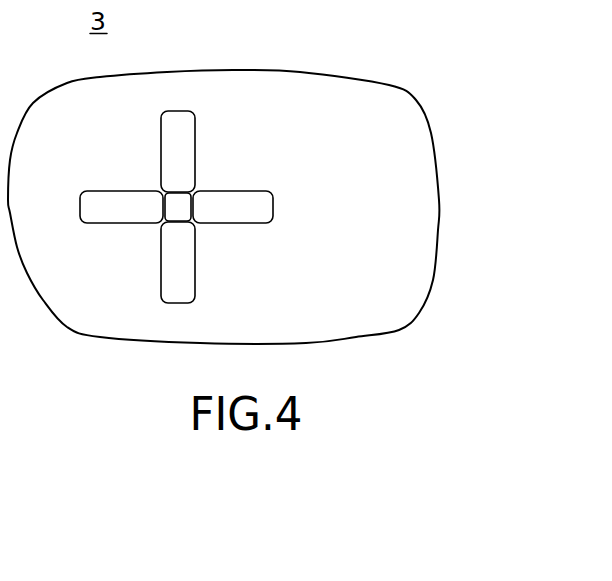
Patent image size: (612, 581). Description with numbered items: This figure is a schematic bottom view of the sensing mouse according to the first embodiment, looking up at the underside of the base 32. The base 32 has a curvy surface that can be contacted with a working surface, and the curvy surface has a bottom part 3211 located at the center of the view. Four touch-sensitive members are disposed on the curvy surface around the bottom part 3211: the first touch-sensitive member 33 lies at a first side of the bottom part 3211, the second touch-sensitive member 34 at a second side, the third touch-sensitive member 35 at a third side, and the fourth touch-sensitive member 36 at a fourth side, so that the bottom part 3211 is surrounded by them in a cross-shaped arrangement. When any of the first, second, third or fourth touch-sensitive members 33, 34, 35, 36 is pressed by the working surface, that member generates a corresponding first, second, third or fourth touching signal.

The base 32 is at (409, 157).
The first touch-sensitive member 33 is at (128, 197).
The second touch-sensitive member 34 is at (171, 144).
The third touch-sensitive member 35 is at (223, 197).
The fourth touch-sensitive member 36 is at (188, 250).
The bottom part 3211 is at (174, 210).